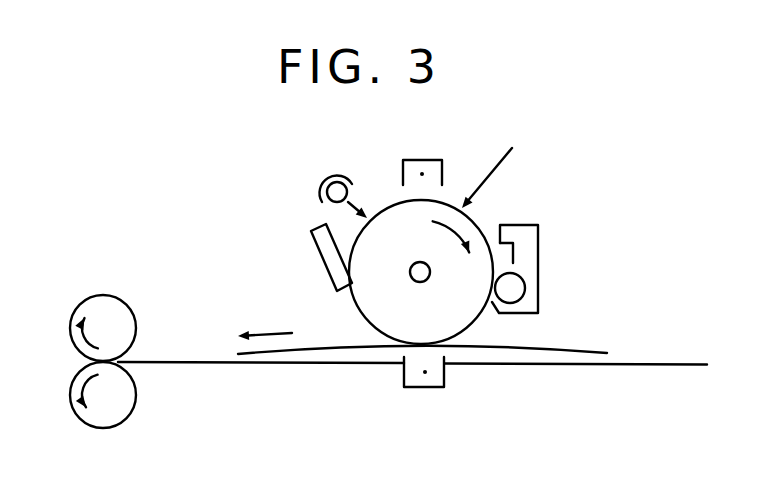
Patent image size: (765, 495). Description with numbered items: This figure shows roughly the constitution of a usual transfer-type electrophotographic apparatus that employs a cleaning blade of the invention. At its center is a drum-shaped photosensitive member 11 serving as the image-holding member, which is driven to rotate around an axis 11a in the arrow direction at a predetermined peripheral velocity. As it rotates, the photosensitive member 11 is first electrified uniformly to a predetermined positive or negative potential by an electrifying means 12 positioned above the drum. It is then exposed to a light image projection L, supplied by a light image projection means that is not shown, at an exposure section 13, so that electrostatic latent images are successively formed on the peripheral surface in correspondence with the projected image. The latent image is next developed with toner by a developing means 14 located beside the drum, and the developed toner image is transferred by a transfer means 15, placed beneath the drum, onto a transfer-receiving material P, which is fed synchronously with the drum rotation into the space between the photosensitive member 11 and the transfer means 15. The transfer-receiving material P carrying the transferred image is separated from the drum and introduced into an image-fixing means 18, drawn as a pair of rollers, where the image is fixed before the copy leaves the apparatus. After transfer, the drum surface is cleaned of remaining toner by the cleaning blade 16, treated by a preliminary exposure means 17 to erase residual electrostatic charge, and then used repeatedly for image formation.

The photosensitive member 11 is at (360, 240).
The axis 11a is at (413, 281).
The electrifying means 12 is at (427, 160).
The exposure section 13 is at (480, 228).
The developing means 14 is at (539, 252).
The transfer means 15 is at (444, 387).
The cleaning blade 16 is at (332, 272).
The preliminary exposure means 17 is at (323, 185).
The image-fixing means 18 is at (105, 295).
The light image projection L is at (484, 172).
The transfer-receiving material P is at (594, 349).